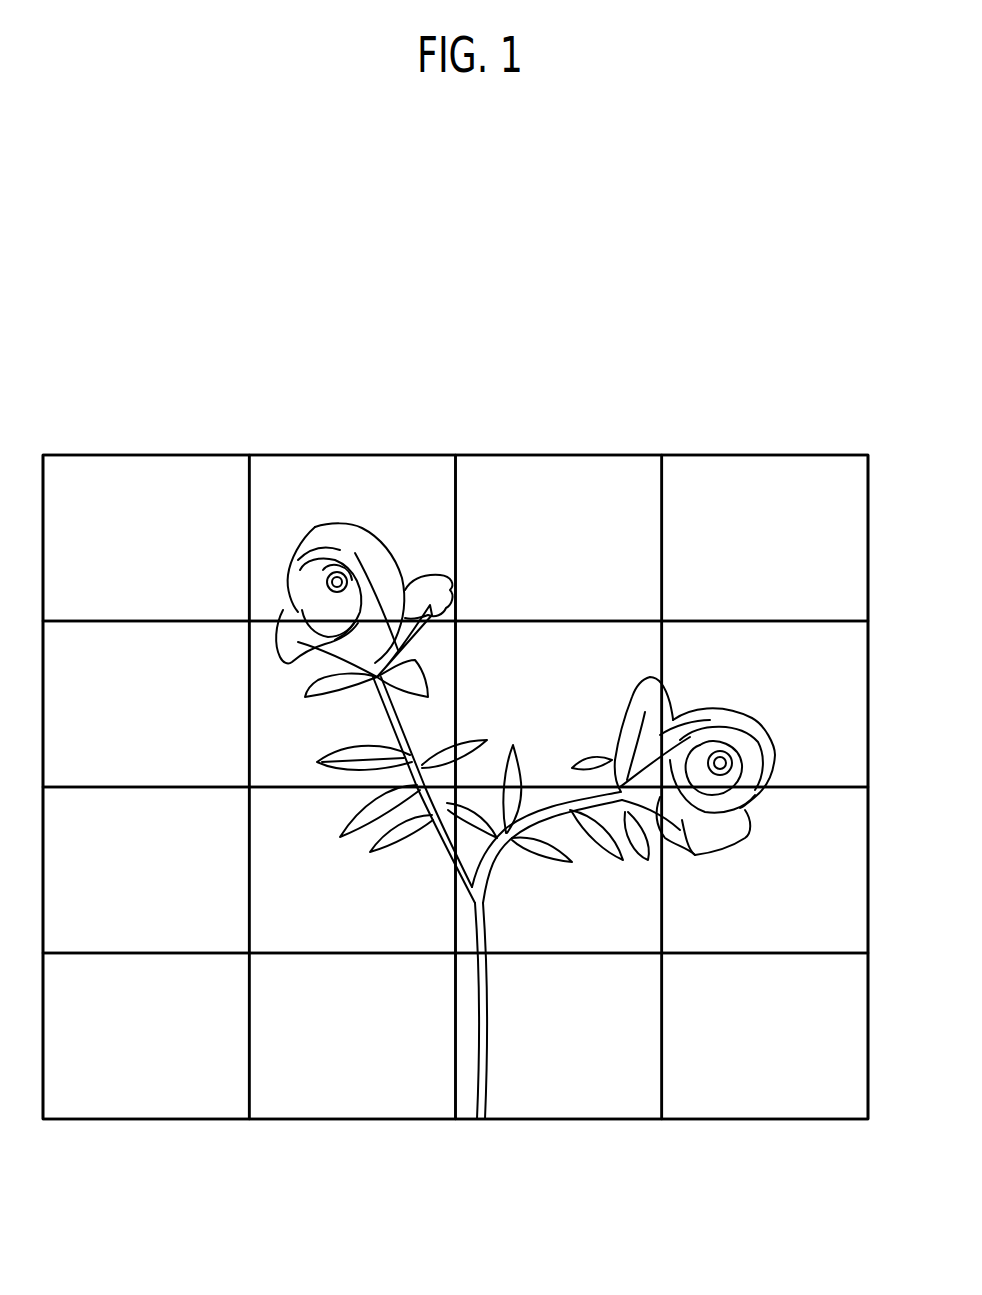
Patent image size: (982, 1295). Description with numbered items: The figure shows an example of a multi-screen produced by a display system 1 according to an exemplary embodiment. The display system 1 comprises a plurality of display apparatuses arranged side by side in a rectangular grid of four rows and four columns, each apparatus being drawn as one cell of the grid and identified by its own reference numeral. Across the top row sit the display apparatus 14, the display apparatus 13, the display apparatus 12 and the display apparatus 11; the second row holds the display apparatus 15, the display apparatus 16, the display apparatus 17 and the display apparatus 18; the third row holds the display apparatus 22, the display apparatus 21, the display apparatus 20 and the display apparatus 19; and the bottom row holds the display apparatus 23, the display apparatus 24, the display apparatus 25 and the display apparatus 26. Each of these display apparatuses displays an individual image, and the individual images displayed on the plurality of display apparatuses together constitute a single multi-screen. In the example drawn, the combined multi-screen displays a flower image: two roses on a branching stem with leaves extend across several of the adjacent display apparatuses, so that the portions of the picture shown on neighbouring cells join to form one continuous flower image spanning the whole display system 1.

The display system 1 is at (806, 418).
The display apparatus 11 is at (765, 538).
The display apparatus 12 is at (559, 538).
The display apparatus 13 is at (352, 538).
The display apparatus 14 is at (146, 538).
The display apparatus 15 is at (146, 704).
The display apparatus 16 is at (352, 704).
The display apparatus 17 is at (559, 704).
The display apparatus 18 is at (765, 704).
The display apparatus 19 is at (765, 870).
The display apparatus 20 is at (559, 870).
The display apparatus 21 is at (352, 870).
The display apparatus 22 is at (146, 870).
The display apparatus 23 is at (146, 1036).
The display apparatus 24 is at (352, 1036).
The display apparatus 25 is at (559, 1036).
The display apparatus 26 is at (765, 1036).